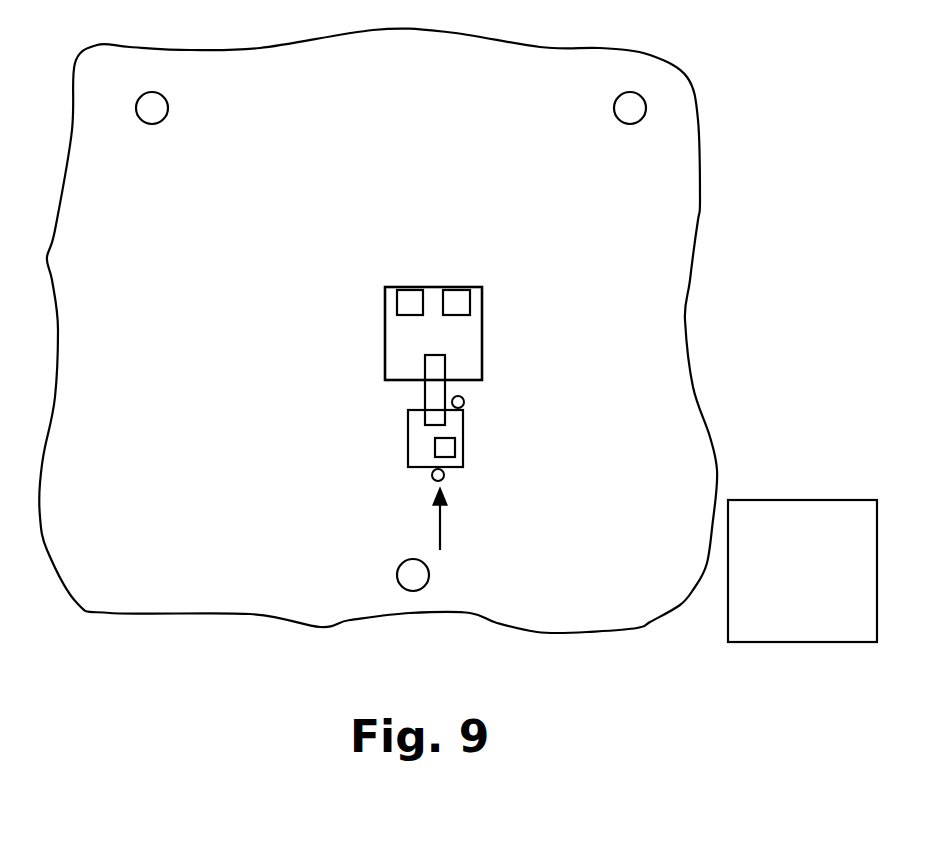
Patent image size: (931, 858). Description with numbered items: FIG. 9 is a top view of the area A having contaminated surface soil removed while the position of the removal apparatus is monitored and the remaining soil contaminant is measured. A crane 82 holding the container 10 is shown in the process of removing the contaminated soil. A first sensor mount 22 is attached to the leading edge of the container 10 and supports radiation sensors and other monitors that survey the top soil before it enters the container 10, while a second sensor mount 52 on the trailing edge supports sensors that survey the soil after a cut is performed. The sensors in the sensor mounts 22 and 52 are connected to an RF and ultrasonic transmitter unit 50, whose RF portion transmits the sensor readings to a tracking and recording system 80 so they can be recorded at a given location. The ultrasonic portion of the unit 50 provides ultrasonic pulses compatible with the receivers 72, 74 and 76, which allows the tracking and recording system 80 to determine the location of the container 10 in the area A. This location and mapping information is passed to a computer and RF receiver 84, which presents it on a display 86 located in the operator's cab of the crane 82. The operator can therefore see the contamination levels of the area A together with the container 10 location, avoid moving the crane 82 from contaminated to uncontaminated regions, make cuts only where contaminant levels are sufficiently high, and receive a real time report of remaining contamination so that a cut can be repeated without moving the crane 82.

The area A is at (77, 603).
The container 10 is at (406, 447).
The first sensor mount 22 is at (465, 401).
The RF and ultrasonic transmitter unit 50 is at (456, 447).
The second sensor mount 52 is at (445, 477).
The receiver 72 is at (615, 102).
The receiver 74 is at (168, 107).
The receiver 76 is at (398, 578).
The tracking and recording system 80 is at (822, 500).
The crane 82 is at (483, 343).
The computer and RF receiver 84 is at (455, 286).
The display 86 is at (403, 286).